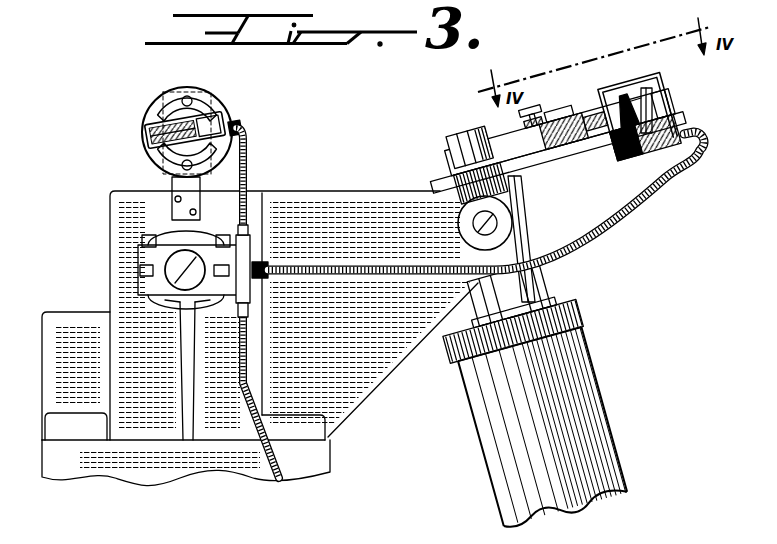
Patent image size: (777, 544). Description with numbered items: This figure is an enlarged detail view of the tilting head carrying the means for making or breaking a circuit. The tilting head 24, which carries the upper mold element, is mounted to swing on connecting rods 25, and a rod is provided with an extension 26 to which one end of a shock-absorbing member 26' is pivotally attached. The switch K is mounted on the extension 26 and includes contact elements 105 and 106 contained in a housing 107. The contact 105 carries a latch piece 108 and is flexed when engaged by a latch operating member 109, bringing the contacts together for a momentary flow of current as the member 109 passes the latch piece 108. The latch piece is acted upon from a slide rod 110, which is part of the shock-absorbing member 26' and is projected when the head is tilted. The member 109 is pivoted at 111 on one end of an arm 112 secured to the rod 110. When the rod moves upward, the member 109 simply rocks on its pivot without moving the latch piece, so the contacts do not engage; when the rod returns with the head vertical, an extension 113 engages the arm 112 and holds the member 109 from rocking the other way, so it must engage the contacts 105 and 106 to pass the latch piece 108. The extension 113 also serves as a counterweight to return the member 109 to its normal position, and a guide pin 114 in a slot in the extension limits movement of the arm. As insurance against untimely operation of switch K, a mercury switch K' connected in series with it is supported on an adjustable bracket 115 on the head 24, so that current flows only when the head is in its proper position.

The tilting head 24 is at (55, 311).
The connecting rods 25 is at (98, 478).
The extension 26 is at (311, 301).
The shock-absorbing member 26' is at (544, 355).
The contact element 105 is at (628, 100).
The contact element 106 is at (642, 95).
The housing 107 is at (668, 104).
The latch piece 108 is at (617, 110).
The latch operating member 109 is at (598, 136).
The slide rod 110 is at (465, 135).
The pivot 111 is at (580, 160).
The arm 112 is at (455, 173).
The extension 113 is at (552, 134).
The guide pin 114 is at (526, 116).
The adjustable bracket 115 is at (150, 157).
The switch K is at (705, 114).
The mercury switch K' is at (259, 111).